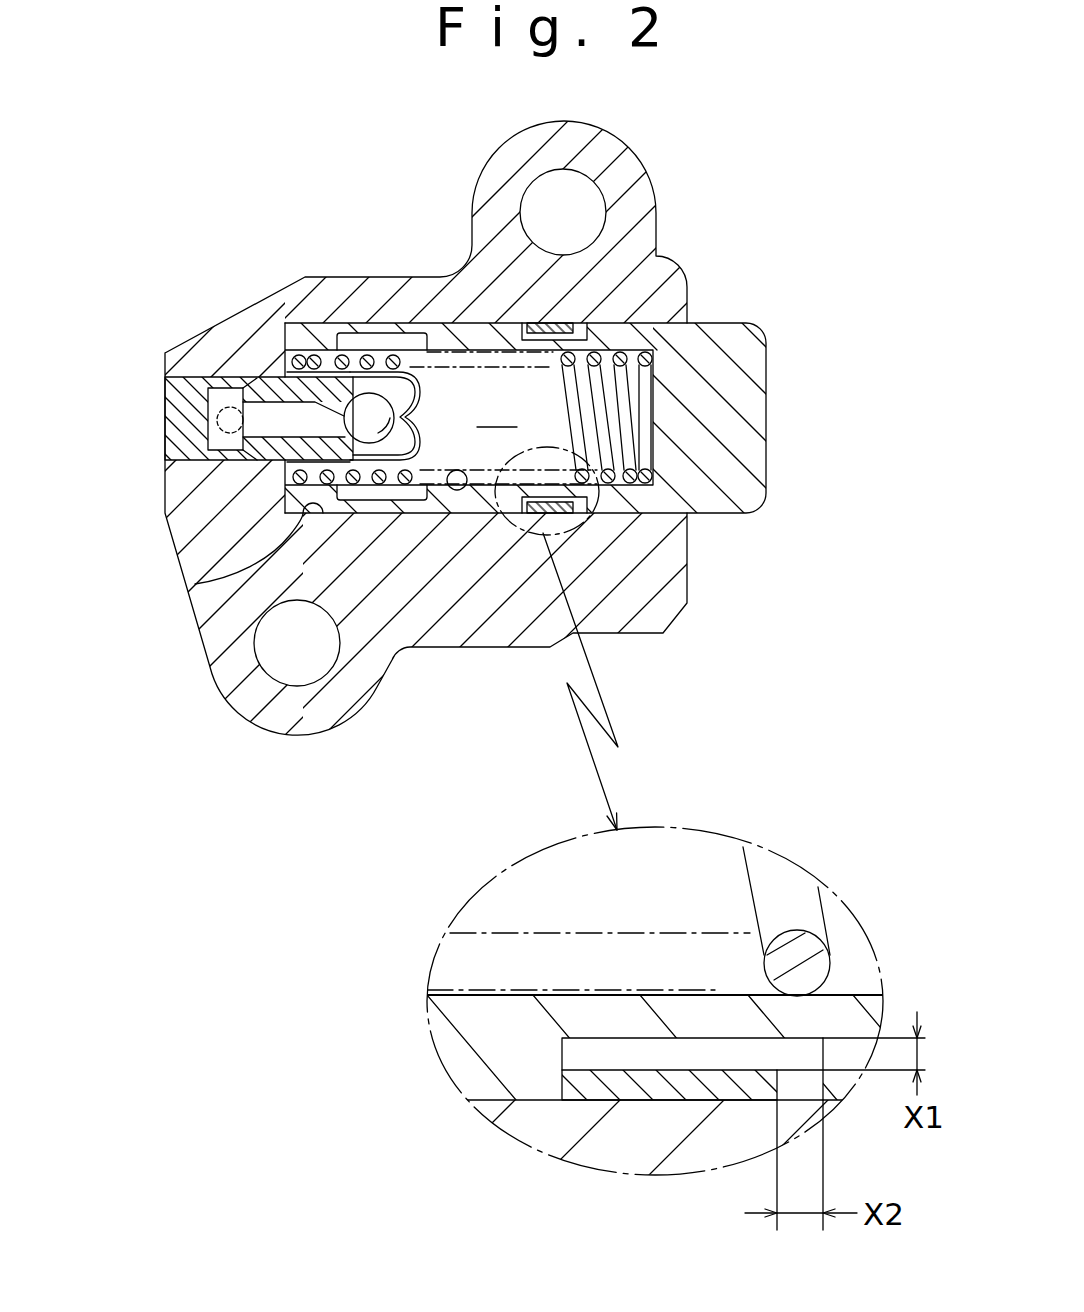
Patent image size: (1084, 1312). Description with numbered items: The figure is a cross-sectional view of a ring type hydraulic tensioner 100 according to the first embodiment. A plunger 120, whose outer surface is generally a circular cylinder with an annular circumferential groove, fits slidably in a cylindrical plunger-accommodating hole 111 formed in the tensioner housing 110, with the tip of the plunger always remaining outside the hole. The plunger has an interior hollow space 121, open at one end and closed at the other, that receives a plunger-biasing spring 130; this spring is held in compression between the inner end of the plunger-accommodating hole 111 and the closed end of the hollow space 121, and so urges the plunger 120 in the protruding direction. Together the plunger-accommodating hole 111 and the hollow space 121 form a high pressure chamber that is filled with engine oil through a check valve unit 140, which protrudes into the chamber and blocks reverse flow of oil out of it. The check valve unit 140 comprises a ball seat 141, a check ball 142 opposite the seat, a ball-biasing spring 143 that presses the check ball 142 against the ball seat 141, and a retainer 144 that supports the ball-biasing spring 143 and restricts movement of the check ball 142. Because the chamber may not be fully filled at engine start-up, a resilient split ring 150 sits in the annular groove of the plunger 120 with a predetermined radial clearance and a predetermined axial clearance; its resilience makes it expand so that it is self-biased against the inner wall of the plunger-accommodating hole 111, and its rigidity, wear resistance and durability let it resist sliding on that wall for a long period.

The ring type hydraulic tensioner 100 is at (690, 158).
The tensioner housing 110 is at (637, 247).
The plunger-accommodating hole 111 is at (195, 584).
The plunger 120 is at (757, 401).
The interior hollow space 121 is at (473, 490).
The plunger-biasing spring 130 is at (650, 318).
The check valve unit 140 is at (249, 311).
The ball seat 141 is at (252, 380).
The check ball 142 is at (262, 392).
The ball-biasing spring 143 is at (380, 373).
The retainer 144 is at (355, 341).
The resilient split ring 150 is at (578, 530).